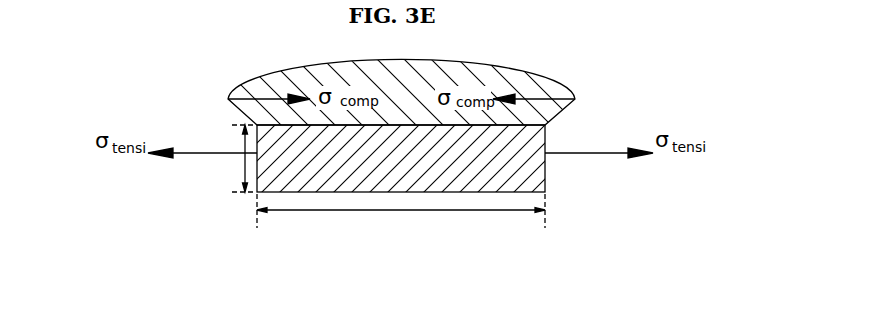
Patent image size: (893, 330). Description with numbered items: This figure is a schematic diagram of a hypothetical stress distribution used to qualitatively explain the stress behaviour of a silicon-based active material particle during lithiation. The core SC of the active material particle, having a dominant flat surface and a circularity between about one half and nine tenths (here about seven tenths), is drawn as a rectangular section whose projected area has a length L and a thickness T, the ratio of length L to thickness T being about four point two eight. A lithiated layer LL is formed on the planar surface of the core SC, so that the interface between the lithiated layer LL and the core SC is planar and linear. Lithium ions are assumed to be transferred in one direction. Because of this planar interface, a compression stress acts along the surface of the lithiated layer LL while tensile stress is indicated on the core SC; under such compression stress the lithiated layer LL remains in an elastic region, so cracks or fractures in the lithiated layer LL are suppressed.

The lithiated layer LL is at (546, 74).
The core of silicon particle SC is at (545, 173).
The thickness T is at (240, 158).
The length L is at (401, 217).